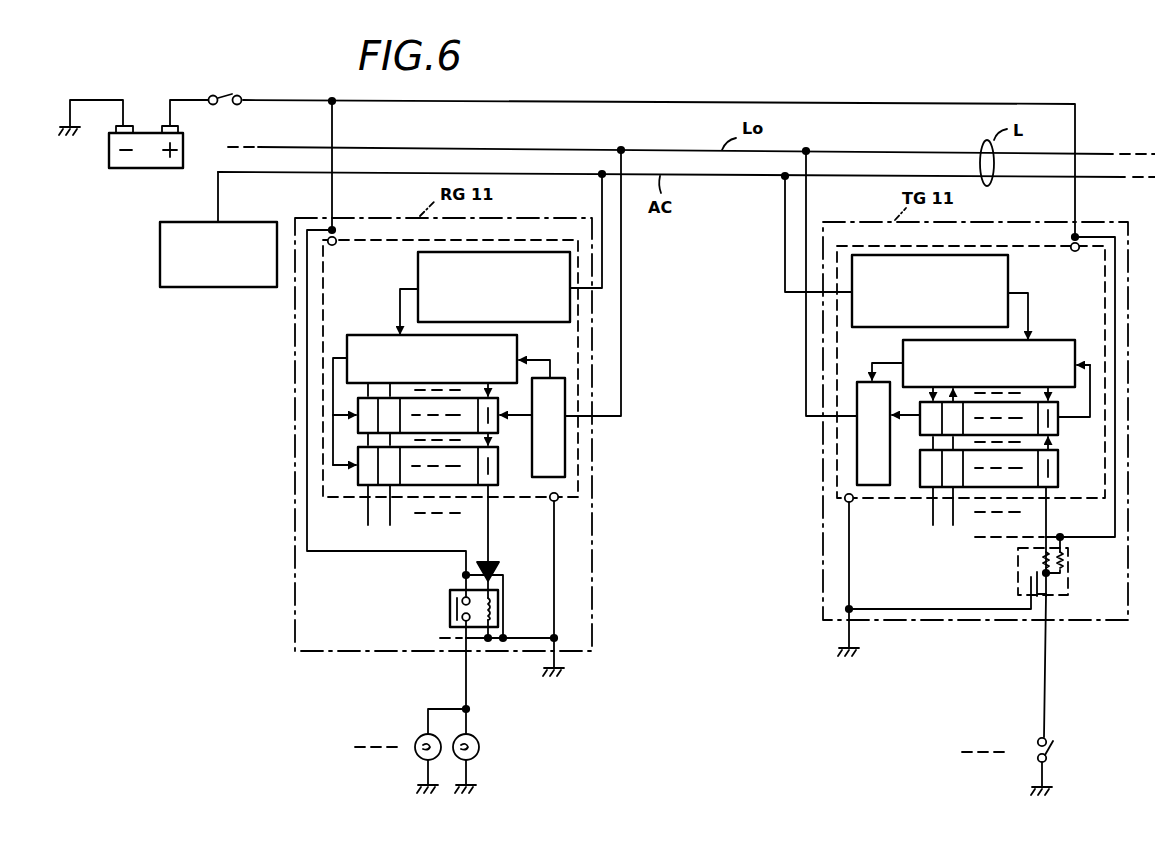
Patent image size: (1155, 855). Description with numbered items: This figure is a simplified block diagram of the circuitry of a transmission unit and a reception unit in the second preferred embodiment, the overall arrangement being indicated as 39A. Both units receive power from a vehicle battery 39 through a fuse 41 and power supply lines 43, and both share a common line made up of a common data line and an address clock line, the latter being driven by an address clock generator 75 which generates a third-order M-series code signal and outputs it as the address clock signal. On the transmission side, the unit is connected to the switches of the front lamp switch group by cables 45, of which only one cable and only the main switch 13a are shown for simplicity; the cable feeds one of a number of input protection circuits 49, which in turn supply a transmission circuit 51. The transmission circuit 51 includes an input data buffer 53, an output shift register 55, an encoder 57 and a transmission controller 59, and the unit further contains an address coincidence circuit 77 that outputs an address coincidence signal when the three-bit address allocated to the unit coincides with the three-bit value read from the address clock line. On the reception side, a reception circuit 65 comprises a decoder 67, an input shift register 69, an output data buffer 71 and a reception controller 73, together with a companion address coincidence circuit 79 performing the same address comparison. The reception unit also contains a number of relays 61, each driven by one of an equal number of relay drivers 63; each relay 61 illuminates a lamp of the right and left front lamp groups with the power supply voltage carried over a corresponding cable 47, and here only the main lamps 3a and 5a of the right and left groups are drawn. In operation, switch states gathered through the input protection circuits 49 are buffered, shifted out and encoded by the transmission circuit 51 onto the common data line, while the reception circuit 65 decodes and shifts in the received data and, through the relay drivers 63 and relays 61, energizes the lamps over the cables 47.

The fuse 41 is at (231, 96).
The power supply lines 43 is at (533, 100).
The vehicle battery 39 is at (148, 168).
The address clock generator 75 is at (262, 222).
The multiplex transmission system 39A is at (729, 91).
The reception circuit 65 is at (338, 245).
The address coincidence circuit 79 is at (418, 270).
The reception controller 73 is at (363, 335).
The decoder 67 is at (562, 378).
The input shift register 69 is at (500, 427).
The output data buffer 71 is at (500, 465).
The relay driver 63 is at (493, 563).
The relay 61 is at (450, 608).
The cable 47 is at (468, 691).
The main lamp 5a is at (417, 738).
The main lamp 3a is at (481, 738).
The address coincidence circuit 77 is at (1010, 284).
The transmission circuit 51 is at (1094, 251).
The transmission controller 59 is at (1062, 340).
The encoder 57 is at (857, 381).
The output shift register 55 is at (1060, 429).
The input data buffer 53 is at (1060, 481).
The input protection circuit 49 is at (1070, 558).
The cable 45 is at (1048, 680).
The main switch 13a is at (1052, 753).